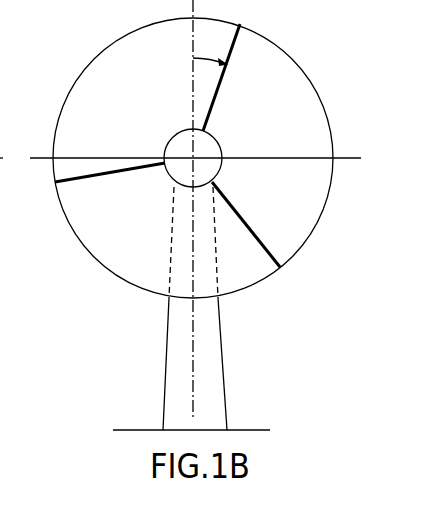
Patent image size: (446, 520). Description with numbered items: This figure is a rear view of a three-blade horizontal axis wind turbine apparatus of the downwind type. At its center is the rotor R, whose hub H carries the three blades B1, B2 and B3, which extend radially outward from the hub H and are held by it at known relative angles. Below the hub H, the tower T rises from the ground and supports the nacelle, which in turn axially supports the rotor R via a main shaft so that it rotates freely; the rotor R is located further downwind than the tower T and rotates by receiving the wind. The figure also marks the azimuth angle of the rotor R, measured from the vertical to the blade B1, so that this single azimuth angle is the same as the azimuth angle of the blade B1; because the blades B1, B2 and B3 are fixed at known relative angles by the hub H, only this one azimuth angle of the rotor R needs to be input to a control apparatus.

The rotor R is at (228, 145).
The hub H is at (172, 135).
The blade B1 is at (234, 46).
The blade B2 is at (257, 233).
The blade B3 is at (92, 178).
The tower T is at (168, 372).